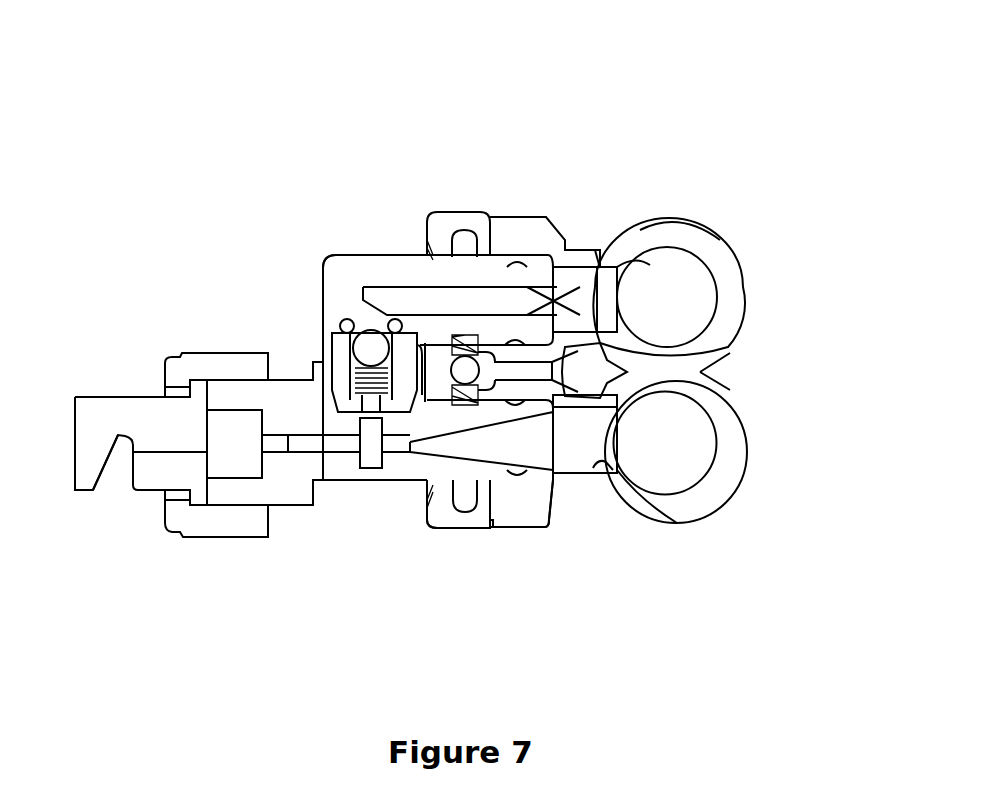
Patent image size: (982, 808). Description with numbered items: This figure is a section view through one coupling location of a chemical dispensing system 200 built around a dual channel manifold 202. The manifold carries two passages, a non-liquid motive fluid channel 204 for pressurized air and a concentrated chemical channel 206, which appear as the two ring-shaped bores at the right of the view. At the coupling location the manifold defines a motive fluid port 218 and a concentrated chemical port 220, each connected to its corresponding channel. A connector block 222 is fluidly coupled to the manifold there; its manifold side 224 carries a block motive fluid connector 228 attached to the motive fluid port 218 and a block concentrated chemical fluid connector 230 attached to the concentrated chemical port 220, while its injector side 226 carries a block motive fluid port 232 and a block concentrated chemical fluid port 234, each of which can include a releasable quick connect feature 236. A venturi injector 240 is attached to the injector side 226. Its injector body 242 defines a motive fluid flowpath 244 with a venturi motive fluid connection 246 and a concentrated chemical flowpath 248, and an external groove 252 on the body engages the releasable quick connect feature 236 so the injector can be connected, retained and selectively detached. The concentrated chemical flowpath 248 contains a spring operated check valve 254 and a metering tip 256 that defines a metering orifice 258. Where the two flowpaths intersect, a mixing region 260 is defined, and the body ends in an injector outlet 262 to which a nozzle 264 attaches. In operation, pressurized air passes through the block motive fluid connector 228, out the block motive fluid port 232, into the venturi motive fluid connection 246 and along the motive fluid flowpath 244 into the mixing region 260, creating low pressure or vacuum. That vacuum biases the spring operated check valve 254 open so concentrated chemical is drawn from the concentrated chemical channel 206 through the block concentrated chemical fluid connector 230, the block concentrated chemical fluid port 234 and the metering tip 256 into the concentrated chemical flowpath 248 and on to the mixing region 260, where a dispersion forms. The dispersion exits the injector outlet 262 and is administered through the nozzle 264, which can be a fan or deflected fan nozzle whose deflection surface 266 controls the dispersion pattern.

The chemical dispensing system 200 is at (530, 55).
The dual channel manifold 202 is at (742, 238).
The non-liquid motive fluid channel 204 is at (668, 442).
The concentrated chemical channel 206 is at (684, 313).
The motive fluid port 218 is at (633, 477).
The concentrated chemical port 220 is at (707, 243).
The connector block 222 is at (525, 215).
The manifold side 224 is at (610, 248).
The injector side 226 is at (423, 243).
The block motive fluid connector 228 is at (595, 505).
The block concentrated chemical fluid connector 230 is at (585, 266).
The block motive fluid port 232 is at (410, 510).
The block concentrated chemical fluid port 234 is at (425, 245).
The releasable quick connect feature 236 is at (465, 238).
The venturi injector 240 is at (288, 368).
The injector body 242 is at (327, 253).
The motive fluid flowpath 244 is at (478, 500).
The venturi motive fluid connection 246 is at (535, 500).
The concentrated chemical flowpath 248 is at (493, 255).
The external groove 252 is at (458, 270).
The spring operated check valve 254 is at (333, 340).
The metering tip 256 is at (602, 337).
The metering orifice 258 is at (585, 300).
The mixing region 260 is at (380, 500).
The injector outlet 262 is at (323, 500).
The nozzle 264 is at (100, 395).
The deflection surface 266 is at (100, 470).